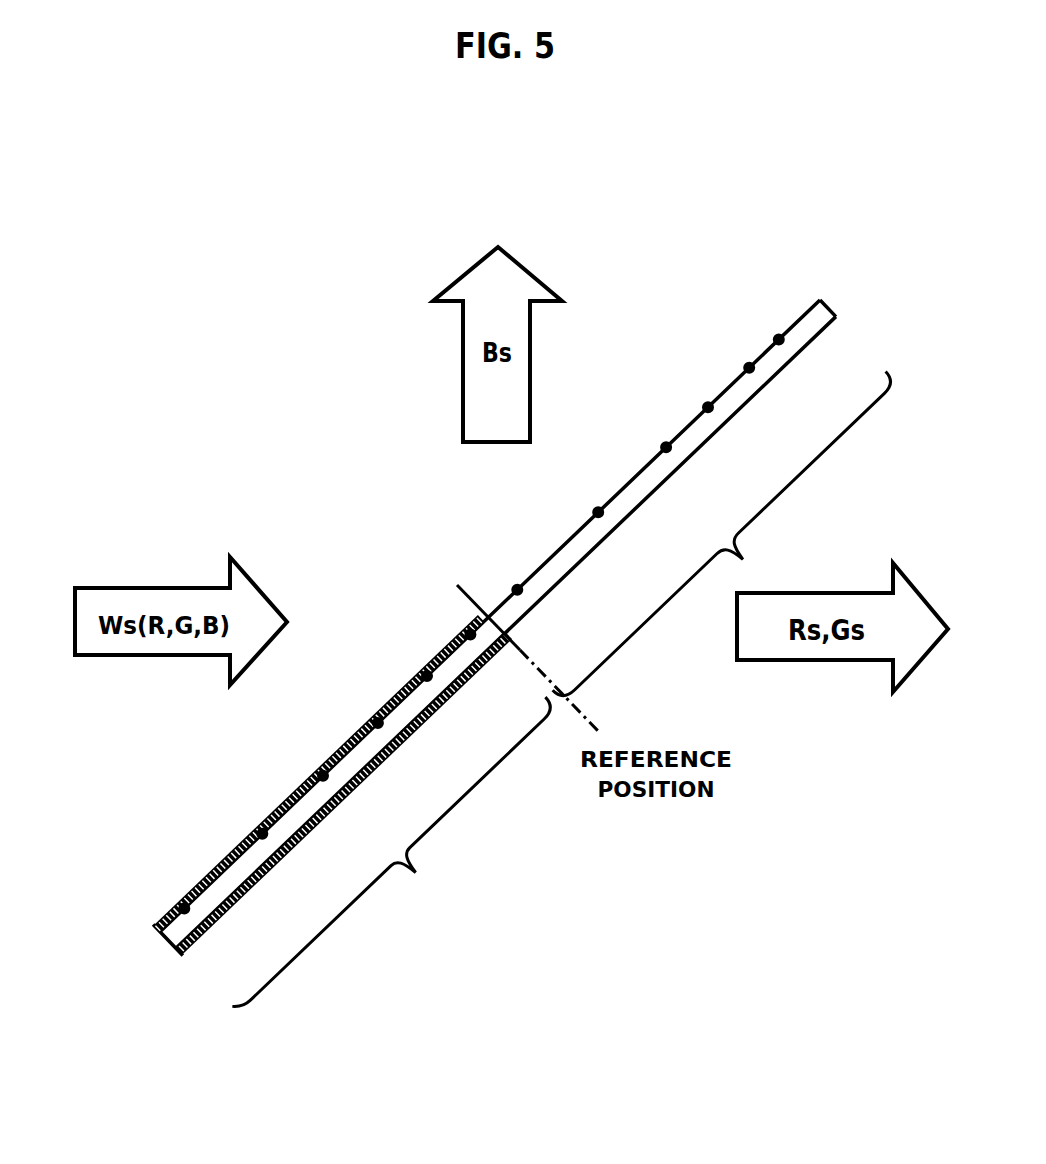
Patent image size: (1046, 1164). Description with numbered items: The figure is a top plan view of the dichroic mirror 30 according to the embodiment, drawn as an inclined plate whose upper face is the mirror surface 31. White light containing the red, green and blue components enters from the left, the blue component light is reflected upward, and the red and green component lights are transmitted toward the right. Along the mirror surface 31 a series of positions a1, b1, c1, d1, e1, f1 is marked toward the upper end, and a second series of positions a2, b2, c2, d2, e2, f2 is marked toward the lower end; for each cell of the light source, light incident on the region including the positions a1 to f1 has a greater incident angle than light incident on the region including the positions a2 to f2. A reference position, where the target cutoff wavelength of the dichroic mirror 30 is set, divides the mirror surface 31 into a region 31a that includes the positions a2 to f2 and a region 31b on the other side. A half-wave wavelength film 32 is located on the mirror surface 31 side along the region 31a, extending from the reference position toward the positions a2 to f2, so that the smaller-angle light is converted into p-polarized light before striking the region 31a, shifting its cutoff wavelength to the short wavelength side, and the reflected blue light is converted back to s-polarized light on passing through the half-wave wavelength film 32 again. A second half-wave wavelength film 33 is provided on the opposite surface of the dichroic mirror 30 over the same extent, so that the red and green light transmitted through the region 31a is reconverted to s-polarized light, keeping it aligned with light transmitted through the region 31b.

The dichroic mirror 30 is at (253, 387).
The mirror surface 31 is at (820, 300).
The region of the mirror surface 31a is at (399, 862).
The region of the mirror surface 31b is at (732, 543).
The λ/2 wavelength film 32 is at (159, 918).
The λ/2 wavelength film 33 is at (205, 932).
The position a1 is at (779, 339).
The position b1 is at (749, 368).
The position c1 is at (708, 407).
The position d1 is at (666, 447).
The position e1 is at (598, 512).
The position f1 is at (517, 590).
The position a2 is at (470, 635).
The position b2 is at (427, 676).
The position c2 is at (378, 723).
The position d2 is at (323, 776).
The position e2 is at (262, 834).
The position f2 is at (184, 908).